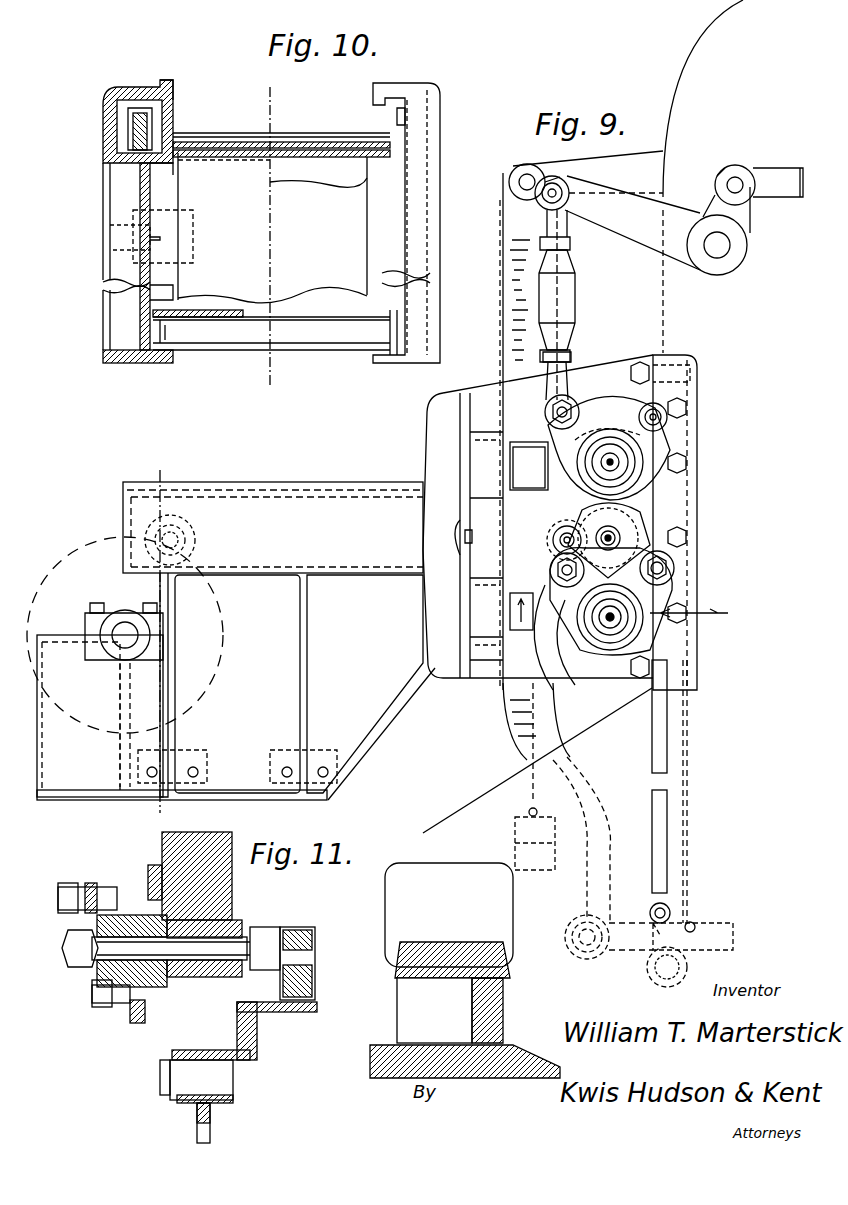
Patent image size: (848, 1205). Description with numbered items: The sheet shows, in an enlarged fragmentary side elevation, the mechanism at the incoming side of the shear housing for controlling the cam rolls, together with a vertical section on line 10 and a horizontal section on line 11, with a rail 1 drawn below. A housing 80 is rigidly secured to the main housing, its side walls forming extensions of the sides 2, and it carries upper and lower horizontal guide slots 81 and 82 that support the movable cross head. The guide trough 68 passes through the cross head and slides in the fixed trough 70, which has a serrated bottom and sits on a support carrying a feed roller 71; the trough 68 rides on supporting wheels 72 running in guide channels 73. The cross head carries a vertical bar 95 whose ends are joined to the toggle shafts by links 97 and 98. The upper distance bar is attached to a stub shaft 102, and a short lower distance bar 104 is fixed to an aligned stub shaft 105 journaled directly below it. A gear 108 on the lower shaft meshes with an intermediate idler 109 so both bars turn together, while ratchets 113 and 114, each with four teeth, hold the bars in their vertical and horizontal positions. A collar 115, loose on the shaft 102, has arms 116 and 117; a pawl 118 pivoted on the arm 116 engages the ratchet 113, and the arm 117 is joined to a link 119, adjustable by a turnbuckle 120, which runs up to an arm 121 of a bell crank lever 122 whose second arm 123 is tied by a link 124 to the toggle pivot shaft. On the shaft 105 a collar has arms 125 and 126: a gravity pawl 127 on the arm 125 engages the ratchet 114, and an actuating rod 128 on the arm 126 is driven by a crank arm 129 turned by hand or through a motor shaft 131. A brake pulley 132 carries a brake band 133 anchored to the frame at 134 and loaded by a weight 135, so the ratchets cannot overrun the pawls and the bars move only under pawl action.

In FIG. 9, the rail 1 is at (423, 833).
In FIG. 9, the sides of the main housing 2 is at (703, 176).
In FIG. 9, the section line 10— 10 is at (159, 639).
In FIG. 9, the section line 11— 11 is at (701, 612).
In FIG. 10, the trough 68 is at (242, 157).
In FIG. 10, the fixed trough 70 is at (178, 92).
In FIG. 9, the fixed trough 70 is at (268, 487).
In FIG. 10, the feed roller 71 is at (175, 277).
In FIG. 9, the feed roller 71 is at (222, 665).
In FIG. 10, the supporting wheels 72 is at (175, 121).
In FIG. 9, the supporting wheels 72 is at (195, 542).
In FIG. 10, the guide channels 73 is at (440, 137).
In FIG. 9, the guide channels 73 is at (236, 665).
In FIG. 9, the housing 80 is at (443, 437).
In FIG. 9, the upper guide slot 81 is at (535, 478).
In FIG. 9, the lower guide slot 82 is at (505, 680).
In FIG. 9, the vertical bar 95 is at (511, 325).
In FIG. 9, the link 97 is at (598, 158).
In FIG. 9, the link 98 is at (615, 953).
In FIG. 9, the stub shaft 102 is at (608, 462).
In FIG. 11, the lower distance bar 104 is at (255, 932).
In FIG. 9, the stub shaft 105 is at (614, 618).
In FIG. 11, the stub shaft 105 is at (215, 957).
In FIG. 11, the gear 108 is at (158, 992).
In FIG. 9, the intermediate idler 109 is at (628, 522).
In FIG. 9, the ratchet 113 is at (650, 495).
In FIG. 9, the ratchet 114 is at (645, 640).
In FIG. 9, the collar 115 is at (640, 448).
In FIG. 9, the arm 116 is at (665, 447).
In FIG. 9, the arm 117 is at (583, 405).
In FIG. 9, the pawl 118 is at (612, 397).
In FIG. 9, the link 119 is at (548, 373).
In FIG. 9, the turnbuckle 120 is at (570, 305).
In FIG. 9, the arm 121 is at (625, 176).
In FIG. 9, the bell crank lever 122 is at (733, 253).
In FIG. 9, the second arm 123 is at (748, 224).
In FIG. 9, the link 124 is at (788, 160).
In FIG. 9, the arm 125 is at (552, 576).
In FIG. 11, the arm 125 is at (115, 1003).
In FIG. 9, the arm 126 is at (645, 603).
In FIG. 11, the arm 126 is at (88, 915).
In FIG. 9, the gravity pawl 127 is at (563, 690).
In FIG. 11, the gravity pawl 127 is at (148, 1025).
In FIG. 9, the actuating rod 128 is at (668, 727).
In FIG. 11, the actuating rod 128 is at (88, 885).
In FIG. 9, the crank arm 129 is at (680, 905).
In FIG. 9, the shaft 131 is at (680, 967).
In FIG. 9, the brake pulley 132 is at (613, 695).
In FIG. 9, the brake band 133 is at (530, 750).
In FIG. 9, the anchor 134 is at (692, 926).
In FIG. 9, the weight 135 is at (515, 833).